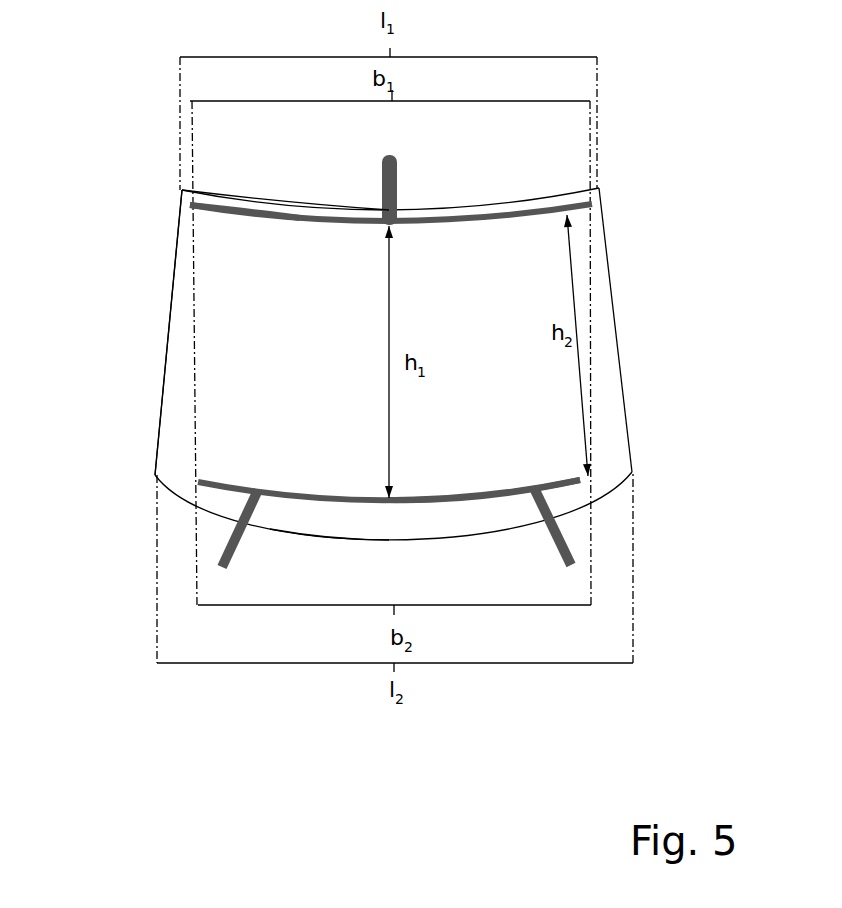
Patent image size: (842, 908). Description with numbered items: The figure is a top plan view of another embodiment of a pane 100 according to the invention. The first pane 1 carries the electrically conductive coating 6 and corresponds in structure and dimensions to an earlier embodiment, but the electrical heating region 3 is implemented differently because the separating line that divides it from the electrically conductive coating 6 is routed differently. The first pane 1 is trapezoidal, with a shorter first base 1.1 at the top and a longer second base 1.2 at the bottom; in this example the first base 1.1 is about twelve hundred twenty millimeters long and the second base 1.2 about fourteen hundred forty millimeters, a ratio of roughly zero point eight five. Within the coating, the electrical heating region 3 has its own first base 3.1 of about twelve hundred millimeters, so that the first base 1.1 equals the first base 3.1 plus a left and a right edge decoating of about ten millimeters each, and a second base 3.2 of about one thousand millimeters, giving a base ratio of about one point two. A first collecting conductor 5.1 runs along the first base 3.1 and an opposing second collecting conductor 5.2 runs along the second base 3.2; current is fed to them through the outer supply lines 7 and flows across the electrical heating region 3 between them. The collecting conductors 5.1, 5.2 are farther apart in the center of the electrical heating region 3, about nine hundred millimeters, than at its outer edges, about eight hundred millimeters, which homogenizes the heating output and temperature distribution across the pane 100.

The pane 100 is at (135, 156).
The first pane 1 is at (170, 292).
The electrical heating region 3 is at (228, 326).
The electrically conductive coating 6 is at (174, 413).
The outer supply lines 7 is at (398, 170).
The first base of the electrical heating region 3.1 is at (247, 212).
The first base of the first pane 1.1 is at (326, 205).
The first collecting conductor 5.1 is at (500, 217).
The second collecting conductor 5.2 is at (308, 500).
The second base of the first pane 1.2 is at (328, 538).
The second base of the electrical heating region 3.2 is at (465, 500).